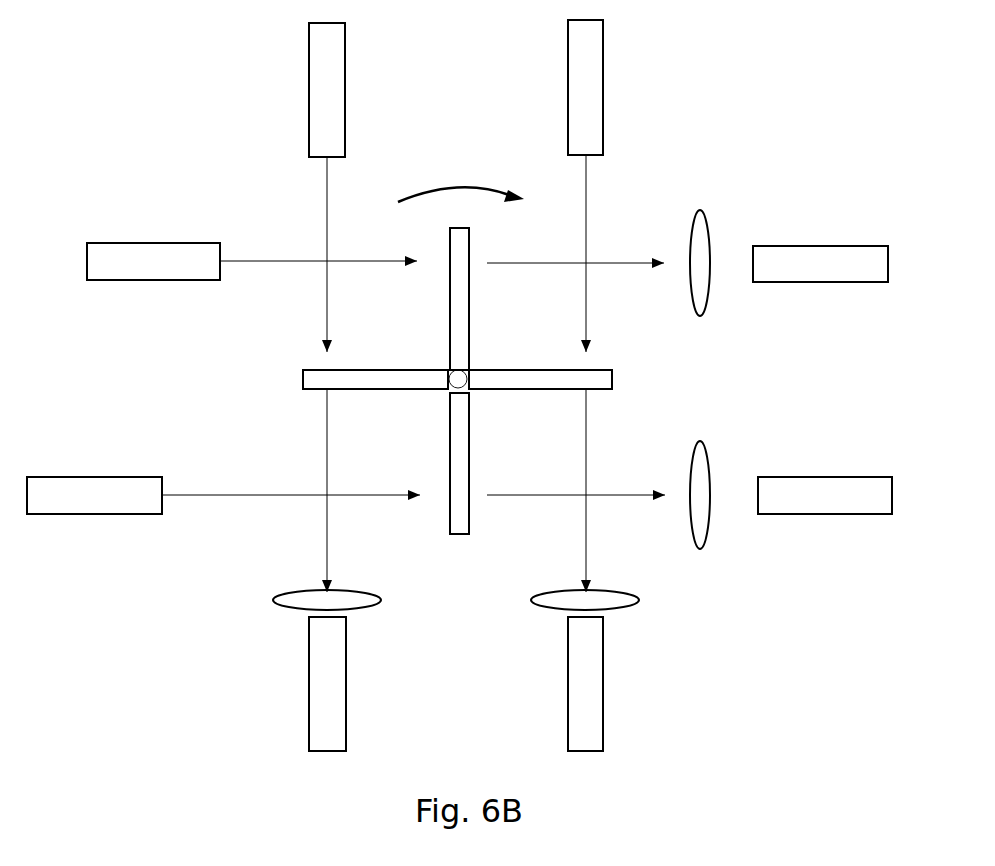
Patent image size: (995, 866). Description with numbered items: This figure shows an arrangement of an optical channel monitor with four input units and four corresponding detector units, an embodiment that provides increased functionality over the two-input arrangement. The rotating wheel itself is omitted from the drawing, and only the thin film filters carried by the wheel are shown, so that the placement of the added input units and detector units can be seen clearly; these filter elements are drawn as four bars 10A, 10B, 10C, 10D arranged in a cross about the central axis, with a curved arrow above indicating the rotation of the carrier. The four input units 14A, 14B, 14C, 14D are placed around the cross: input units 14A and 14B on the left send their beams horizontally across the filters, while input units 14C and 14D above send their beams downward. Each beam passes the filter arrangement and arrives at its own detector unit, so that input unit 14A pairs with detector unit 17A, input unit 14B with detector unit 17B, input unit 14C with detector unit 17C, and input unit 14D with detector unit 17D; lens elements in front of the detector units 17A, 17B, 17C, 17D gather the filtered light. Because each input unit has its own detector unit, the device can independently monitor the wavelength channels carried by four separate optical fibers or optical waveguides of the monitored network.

The mirror segment 10A is at (458, 333).
The mirror segment 10B is at (312, 382).
The mirror segment 10C is at (459, 534).
The mirror segment 10D is at (605, 382).
The input unit 14A is at (98, 252).
The input unit 14B is at (125, 478).
The input unit 14C is at (335, 113).
The input unit 14D is at (594, 94).
The detector unit 17A is at (792, 247).
The detector unit 17B is at (798, 487).
The detector unit 17C is at (312, 669).
The detector unit 17D is at (595, 698).